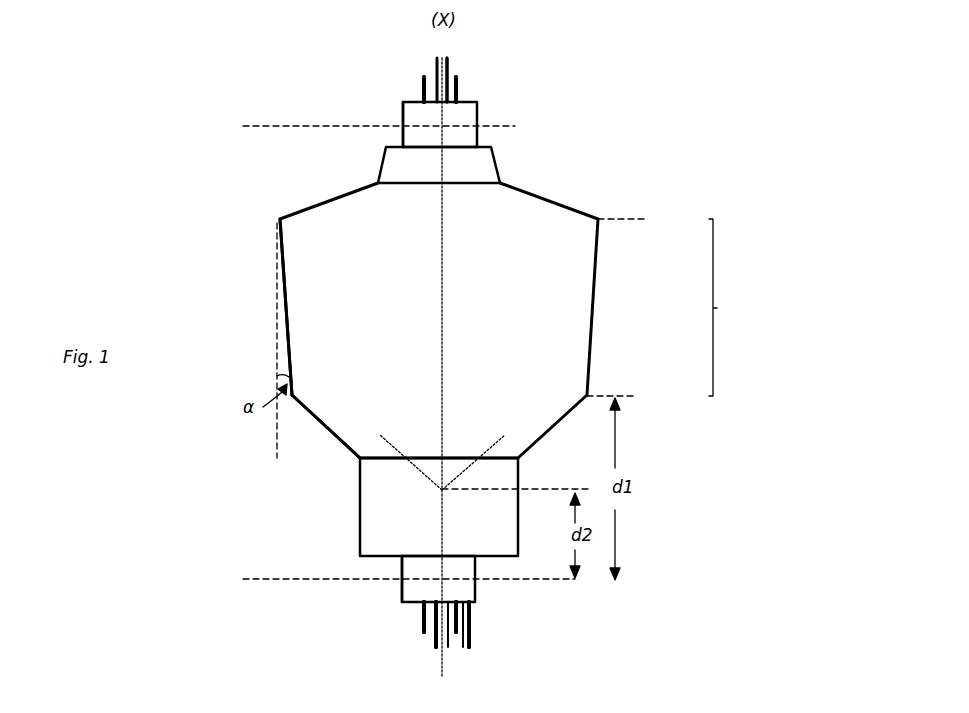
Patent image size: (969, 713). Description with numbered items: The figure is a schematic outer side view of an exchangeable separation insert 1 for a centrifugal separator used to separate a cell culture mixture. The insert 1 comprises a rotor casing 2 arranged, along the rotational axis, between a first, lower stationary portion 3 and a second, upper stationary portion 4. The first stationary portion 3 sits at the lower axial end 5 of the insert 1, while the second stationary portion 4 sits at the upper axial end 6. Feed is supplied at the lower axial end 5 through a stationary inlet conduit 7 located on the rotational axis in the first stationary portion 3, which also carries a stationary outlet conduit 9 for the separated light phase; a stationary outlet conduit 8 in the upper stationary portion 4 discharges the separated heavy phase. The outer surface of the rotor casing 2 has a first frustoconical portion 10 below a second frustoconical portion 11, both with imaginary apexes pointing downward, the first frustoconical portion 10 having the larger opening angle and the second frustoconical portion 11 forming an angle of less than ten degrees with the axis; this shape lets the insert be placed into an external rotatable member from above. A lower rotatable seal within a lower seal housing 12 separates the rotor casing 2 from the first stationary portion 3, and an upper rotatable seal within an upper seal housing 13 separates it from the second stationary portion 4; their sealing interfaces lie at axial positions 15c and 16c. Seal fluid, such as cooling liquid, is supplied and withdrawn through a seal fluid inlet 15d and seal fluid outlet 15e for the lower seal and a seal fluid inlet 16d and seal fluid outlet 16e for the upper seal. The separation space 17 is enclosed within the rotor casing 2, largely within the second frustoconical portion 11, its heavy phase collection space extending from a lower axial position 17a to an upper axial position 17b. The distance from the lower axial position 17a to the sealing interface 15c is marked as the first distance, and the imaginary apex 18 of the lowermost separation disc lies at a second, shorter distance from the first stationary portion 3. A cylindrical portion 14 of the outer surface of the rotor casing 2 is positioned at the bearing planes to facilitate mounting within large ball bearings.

The exchangeable separation insert 1 is at (100, 122).
The rotor casing 2 is at (330, 200).
The first stationary portion 3 is at (402, 590).
The second stationary portion 4 is at (477, 117).
The lower axial end 5 is at (368, 624).
The upper axial end 6 is at (393, 86).
The stationary inlet conduit 7 is at (437, 650).
The stationary outlet conduit 8 is at (448, 62).
The stationary outlet conduit 9 is at (470, 638).
The first frustoconical portion 10 is at (320, 427).
The second frustoconical portion 11 is at (283, 290).
The lower seal housing 12 is at (475, 573).
The upper seal housing 13 is at (403, 132).
The cylindrical portion 14 is at (360, 527).
The sealing interface axial position 15c is at (387, 577).
The seal fluid inlet 15d is at (424, 637).
The seal fluid outlet 15e is at (456, 635).
The sealing interface axial position 16c is at (359, 125).
The seal fluid inlet 16d is at (423, 68).
The seal fluid outlet 16e is at (458, 83).
The separation space 17 is at (729, 307).
The first axial position 17a is at (590, 393).
The second axial position 17b is at (600, 217).
The imaginary apex 18 is at (424, 490).